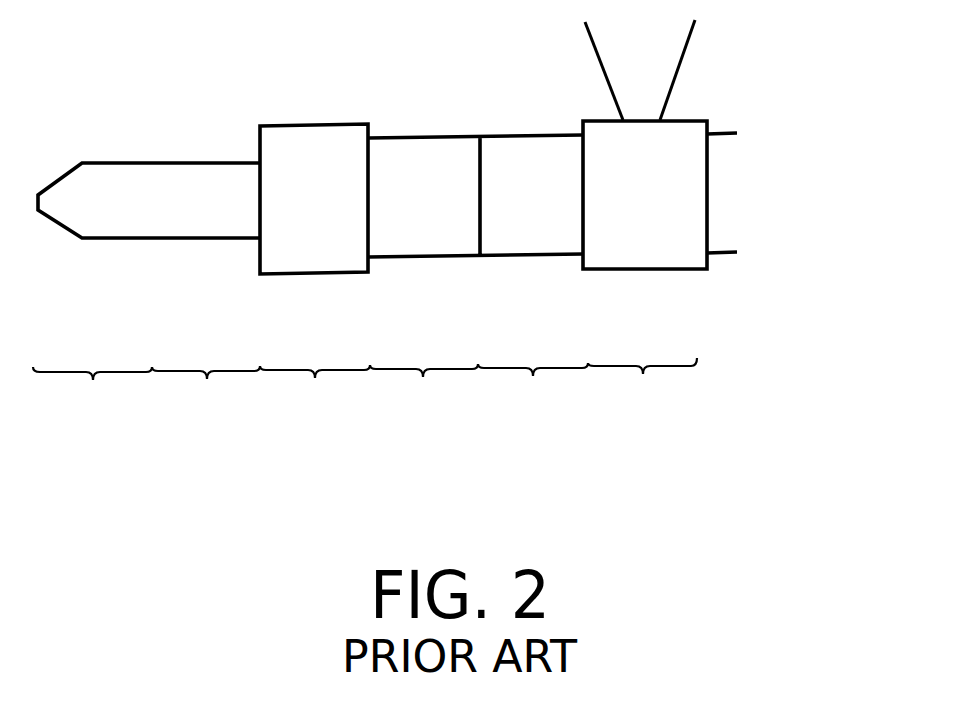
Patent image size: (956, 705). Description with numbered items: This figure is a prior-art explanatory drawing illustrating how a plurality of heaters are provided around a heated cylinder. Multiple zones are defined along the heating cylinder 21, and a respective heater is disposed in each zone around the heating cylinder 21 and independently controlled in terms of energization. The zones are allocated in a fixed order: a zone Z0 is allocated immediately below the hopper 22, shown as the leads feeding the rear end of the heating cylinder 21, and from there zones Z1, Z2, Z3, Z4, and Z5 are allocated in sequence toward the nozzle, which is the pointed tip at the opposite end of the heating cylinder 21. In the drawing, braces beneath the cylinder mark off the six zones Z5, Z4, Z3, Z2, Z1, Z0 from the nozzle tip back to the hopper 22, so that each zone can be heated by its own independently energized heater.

The heating cylinder 21 is at (220, 126).
The hopper 22 is at (683, 62).
The zone Z5 is at (92, 397).
The zone Z4 is at (206, 396).
The zone Z3 is at (315, 395).
The zone Z2 is at (424, 394).
The zone Z1 is at (533, 392).
The zone Z0 is at (642, 389).